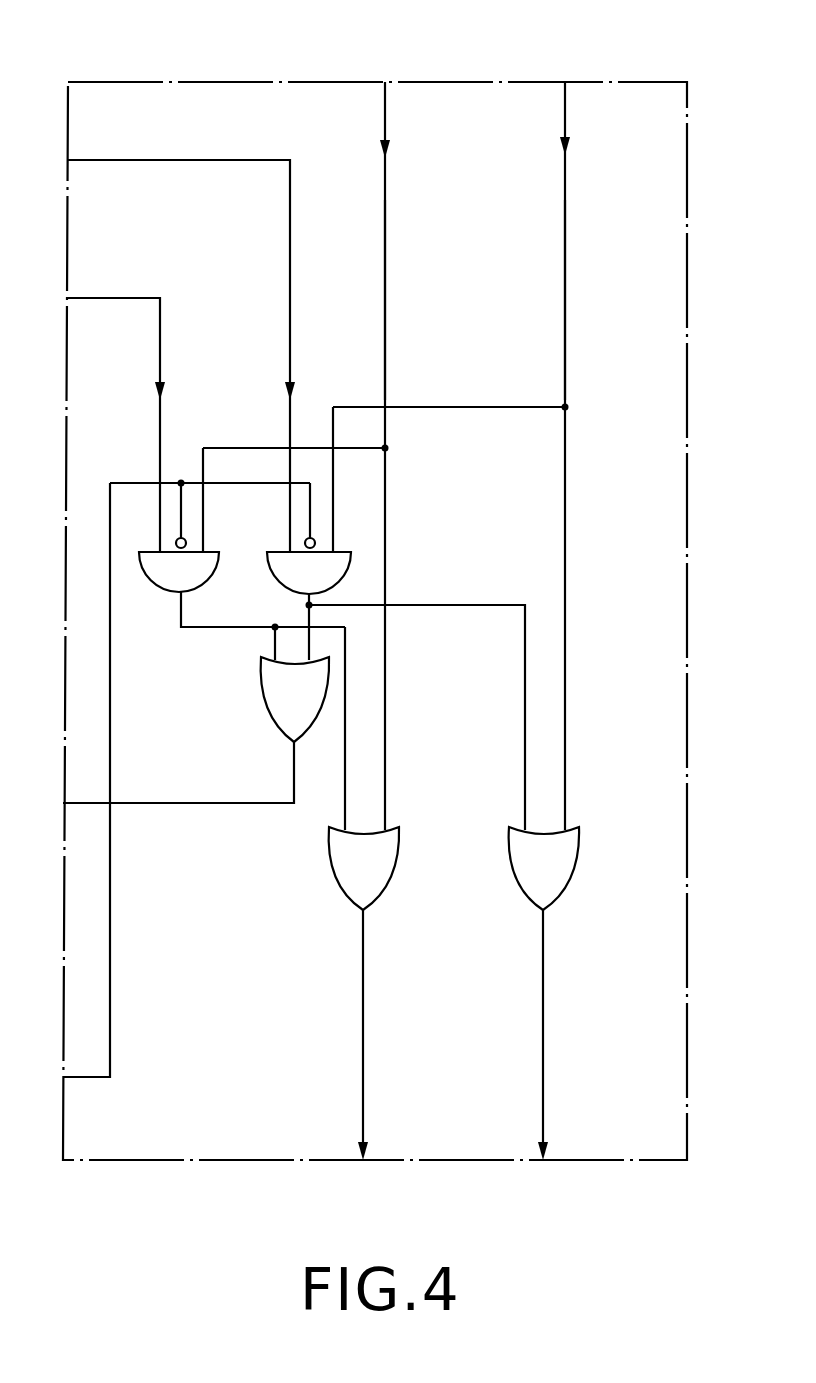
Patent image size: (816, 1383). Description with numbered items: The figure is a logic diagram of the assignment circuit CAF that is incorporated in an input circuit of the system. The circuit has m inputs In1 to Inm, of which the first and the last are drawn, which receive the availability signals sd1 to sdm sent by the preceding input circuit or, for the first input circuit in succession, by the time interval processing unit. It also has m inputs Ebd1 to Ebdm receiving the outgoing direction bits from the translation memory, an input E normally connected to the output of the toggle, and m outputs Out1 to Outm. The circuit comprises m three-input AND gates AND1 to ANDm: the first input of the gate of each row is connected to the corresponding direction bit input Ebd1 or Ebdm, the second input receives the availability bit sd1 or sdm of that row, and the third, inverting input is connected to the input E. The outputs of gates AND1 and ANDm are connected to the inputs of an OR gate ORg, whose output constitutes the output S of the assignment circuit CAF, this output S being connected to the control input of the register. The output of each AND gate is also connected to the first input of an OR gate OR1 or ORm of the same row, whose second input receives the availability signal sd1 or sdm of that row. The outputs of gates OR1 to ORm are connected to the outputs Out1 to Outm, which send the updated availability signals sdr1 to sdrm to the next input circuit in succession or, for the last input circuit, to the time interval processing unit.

The assignment circuit CAF is at (300, 82).
The first input In1 is at (381, 439).
The m-th input Inm is at (560, 439).
The availability signal of row one sd1 is at (385, 276).
The availability signal of row m sdm is at (565, 278).
The direction bit input of row one Ebd1 is at (181, 340).
The direction bit input of row m Ebdm is at (116, 410).
The assignment signal input E is at (73, 788).
The output of the assignment circuit S is at (165, 780).
The first AND gate AND1 is at (242, 691).
The m-th AND gate ANDm is at (396, 691).
The OR gate ORg is at (295, 699).
The first OR gate OR1 is at (364, 868).
The m-th OR gate ORm is at (544, 868).
The updated availability signal of row one sdr1 is at (363, 1017).
The updated availability signal of row m sdrm is at (543, 1017).
The first output Out1 is at (393, 1146).
The m-th output Outm is at (576, 1146).